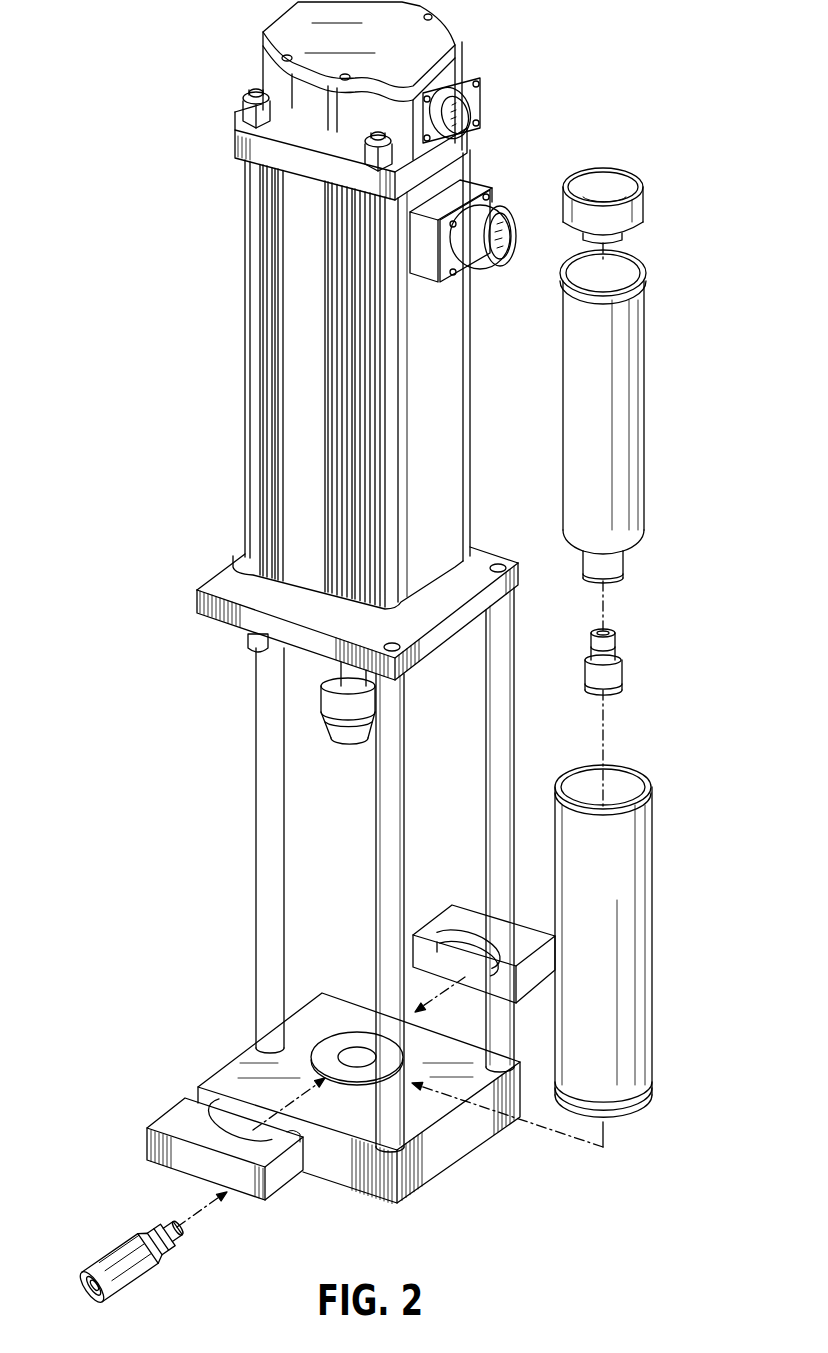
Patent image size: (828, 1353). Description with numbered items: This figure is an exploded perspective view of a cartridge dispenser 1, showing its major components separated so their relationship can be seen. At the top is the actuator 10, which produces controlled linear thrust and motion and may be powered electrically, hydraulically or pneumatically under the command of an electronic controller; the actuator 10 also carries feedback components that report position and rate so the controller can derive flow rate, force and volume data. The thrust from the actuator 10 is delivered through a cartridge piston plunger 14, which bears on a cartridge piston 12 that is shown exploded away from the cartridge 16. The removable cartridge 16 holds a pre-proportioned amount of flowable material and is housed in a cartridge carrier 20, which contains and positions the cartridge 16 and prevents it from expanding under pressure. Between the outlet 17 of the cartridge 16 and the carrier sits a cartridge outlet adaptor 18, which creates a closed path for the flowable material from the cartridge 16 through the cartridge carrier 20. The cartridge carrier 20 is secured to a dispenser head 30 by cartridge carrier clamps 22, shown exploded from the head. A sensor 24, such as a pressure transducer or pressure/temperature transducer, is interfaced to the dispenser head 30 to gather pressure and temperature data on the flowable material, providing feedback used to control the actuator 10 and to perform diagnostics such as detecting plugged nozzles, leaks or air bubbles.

The cartridge dispenser 1 is at (160, 238).
The actuator 10 is at (248, 346).
The cartridge piston 12 is at (643, 205).
The cartridge piston plunger 14 is at (318, 720).
The cartridge 16 is at (637, 401).
The outlet 17 is at (618, 585).
The cartridge outlet adaptor 18 is at (625, 670).
The cartridge carrier 20 is at (645, 928).
The cartridge carrier clamps 22 is at (432, 930).
The sensor 24 is at (148, 1280).
The dispenser head 30 is at (250, 1055).